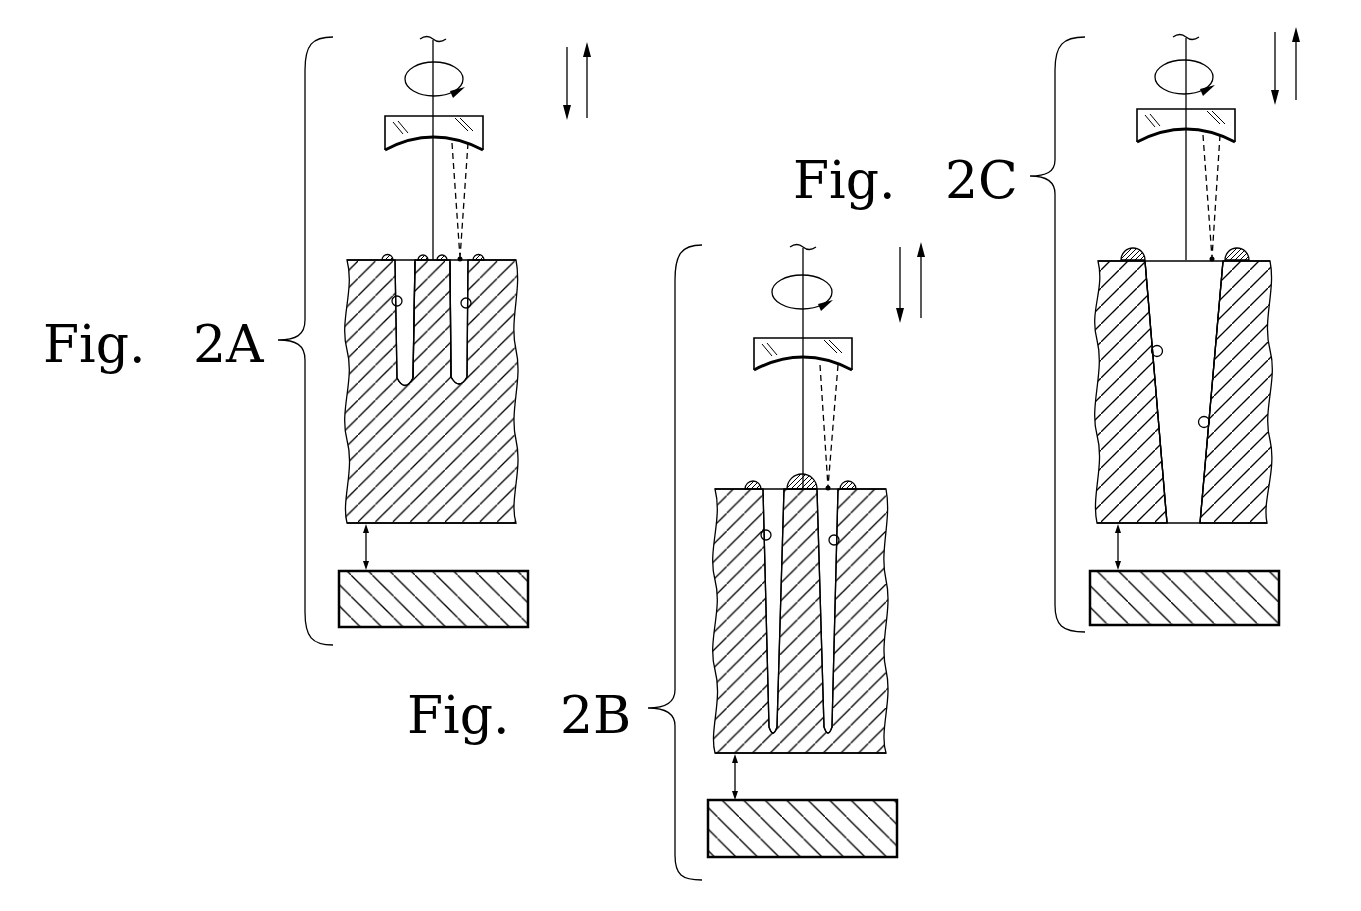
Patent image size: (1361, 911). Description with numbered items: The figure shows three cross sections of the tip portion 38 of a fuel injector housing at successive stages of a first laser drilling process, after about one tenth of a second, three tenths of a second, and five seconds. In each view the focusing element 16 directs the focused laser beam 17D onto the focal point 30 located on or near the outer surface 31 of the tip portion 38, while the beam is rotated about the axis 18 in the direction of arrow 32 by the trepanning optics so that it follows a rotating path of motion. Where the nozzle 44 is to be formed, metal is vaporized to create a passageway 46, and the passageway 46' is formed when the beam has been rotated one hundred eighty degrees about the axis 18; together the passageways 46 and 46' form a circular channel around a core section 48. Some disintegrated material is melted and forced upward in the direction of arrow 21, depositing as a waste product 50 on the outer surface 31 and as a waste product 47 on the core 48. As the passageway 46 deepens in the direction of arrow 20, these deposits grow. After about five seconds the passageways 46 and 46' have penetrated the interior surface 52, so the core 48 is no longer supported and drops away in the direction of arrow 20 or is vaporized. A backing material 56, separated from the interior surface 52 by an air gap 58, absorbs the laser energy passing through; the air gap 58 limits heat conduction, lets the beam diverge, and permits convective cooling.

In FIG. 2A, the lens 16 is at (484, 130).
In FIG. 2B, the lens 16 is at (853, 352).
In FIG. 2C, the lens 16 is at (1236, 125).
In FIG. 2A, the focused laser beam 17D is at (472, 190).
In FIG. 2B, the focused laser beam 17D is at (842, 417).
In FIG. 2C, the focused laser beam 17D is at (1225, 190).
In FIG. 2A, the axis 18 is at (432, 183).
In FIG. 2B, the axis 18 is at (802, 410).
In FIG. 2C, the axis 18 is at (1185, 220).
In FIG. 2A, the arrow 20 is at (566, 70).
In FIG. 2B, the arrow 20 is at (899, 273).
In FIG. 2C, the arrow 20 is at (1274, 55).
In FIG. 2A, the arrow 21 is at (588, 90).
In FIG. 2B, the arrow 21 is at (922, 292).
In FIG. 2C, the arrow 21 is at (1297, 75).
In FIG. 2A, the focal point 30 is at (462, 256).
In FIG. 2B, the focal point 30 is at (830, 485).
In FIG. 2C, the focal point 30 is at (1214, 256).
In FIG. 2A, the outer surface 31 is at (517, 261).
In FIG. 2B, the outer surface 31 is at (887, 489).
In FIG. 2C, the outer surface 31 is at (1271, 260).
In FIG. 2A, the arrow 32 is at (405, 79).
In FIG. 2B, the arrow 32 is at (772, 292).
In FIG. 2C, the arrow 32 is at (1155, 77).
In FIG. 2A, the tip portion 38 is at (358, 435).
In FIG. 2B, the tip portion 38 is at (735, 659).
In FIG. 2C, the tip portion 38 is at (1110, 427).
In FIG. 2C, the nozzle 44 is at (1280, 388).
In FIG. 2A, the passageway 46 is at (507, 322).
In FIG. 2B, the passageway 46 is at (874, 611).
In FIG. 2C, the passageway 46 is at (1248, 392).
In FIG. 2A, the passageway 46' is at (364, 323).
In FIG. 2B, the passageway 46' is at (732, 611).
In FIG. 2C, the passageway 46' is at (1114, 392).
In FIG. 2A, the waste product 47 is at (423, 258).
In FIG. 2B, the waste product 47 is at (792, 484).
In FIG. 2A, the core section 48 is at (432, 352).
In FIG. 2A, the waste product 50 is at (384, 256).
In FIG. 2B, the waste product 50 is at (748, 486).
In FIG. 2C, the waste product 50 is at (1125, 254).
In FIG. 2A, the interior surface 52 is at (500, 524).
In FIG. 2B, the interior surface 52 is at (870, 754).
In FIG. 2C, the interior surface 52 is at (1258, 524).
In FIG. 2A, the backing material 56 is at (367, 617).
In FIG. 2B, the backing material 56 is at (886, 827).
In FIG. 2C, the backing material 56 is at (1118, 615).
In FIG. 2A, the air gap 58 is at (369, 548).
In FIG. 2B, the air gap 58 is at (738, 776).
In FIG. 2C, the air gap 58 is at (1121, 548).